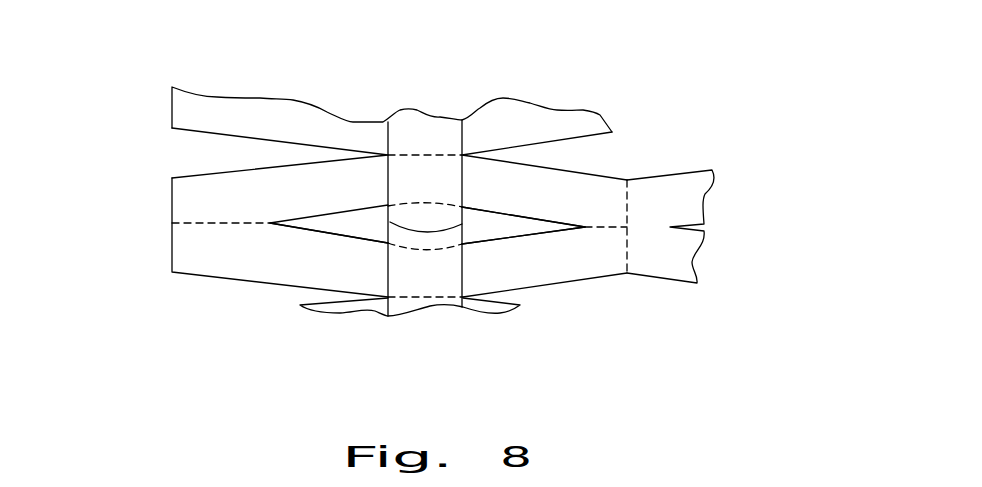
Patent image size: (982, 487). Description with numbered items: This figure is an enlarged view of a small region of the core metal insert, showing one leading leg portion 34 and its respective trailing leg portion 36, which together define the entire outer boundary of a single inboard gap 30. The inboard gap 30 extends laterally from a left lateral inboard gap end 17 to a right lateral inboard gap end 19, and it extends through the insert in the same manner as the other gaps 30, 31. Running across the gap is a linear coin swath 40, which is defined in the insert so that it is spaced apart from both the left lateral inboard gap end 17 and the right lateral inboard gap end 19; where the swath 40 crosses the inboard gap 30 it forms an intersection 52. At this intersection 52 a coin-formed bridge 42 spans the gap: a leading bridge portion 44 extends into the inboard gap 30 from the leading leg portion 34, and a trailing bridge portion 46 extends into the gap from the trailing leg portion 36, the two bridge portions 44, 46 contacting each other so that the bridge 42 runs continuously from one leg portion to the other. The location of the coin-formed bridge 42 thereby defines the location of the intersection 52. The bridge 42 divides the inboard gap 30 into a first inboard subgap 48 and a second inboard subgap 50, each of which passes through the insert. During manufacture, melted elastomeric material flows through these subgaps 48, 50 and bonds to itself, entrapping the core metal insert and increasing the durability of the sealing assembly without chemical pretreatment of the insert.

The left lateral inboard gap end 17 is at (257, 204).
The right lateral inboard gap end 19 is at (587, 216).
The inboard gap 30 is at (500, 250).
The gap 31 is at (213, 150).
The leading leg portion 34 is at (295, 172).
The trailing leg portion 36 is at (230, 267).
The linear coin swath 40 is at (412, 145).
The coin-formed bridge 42 is at (416, 255).
The leading bridge portion 44 is at (423, 222).
The trailing bridge portion 46 is at (457, 238).
The first inboard subgap 48 is at (341, 234).
The second inboard subgap 50 is at (510, 236).
The intersection 52 is at (479, 215).